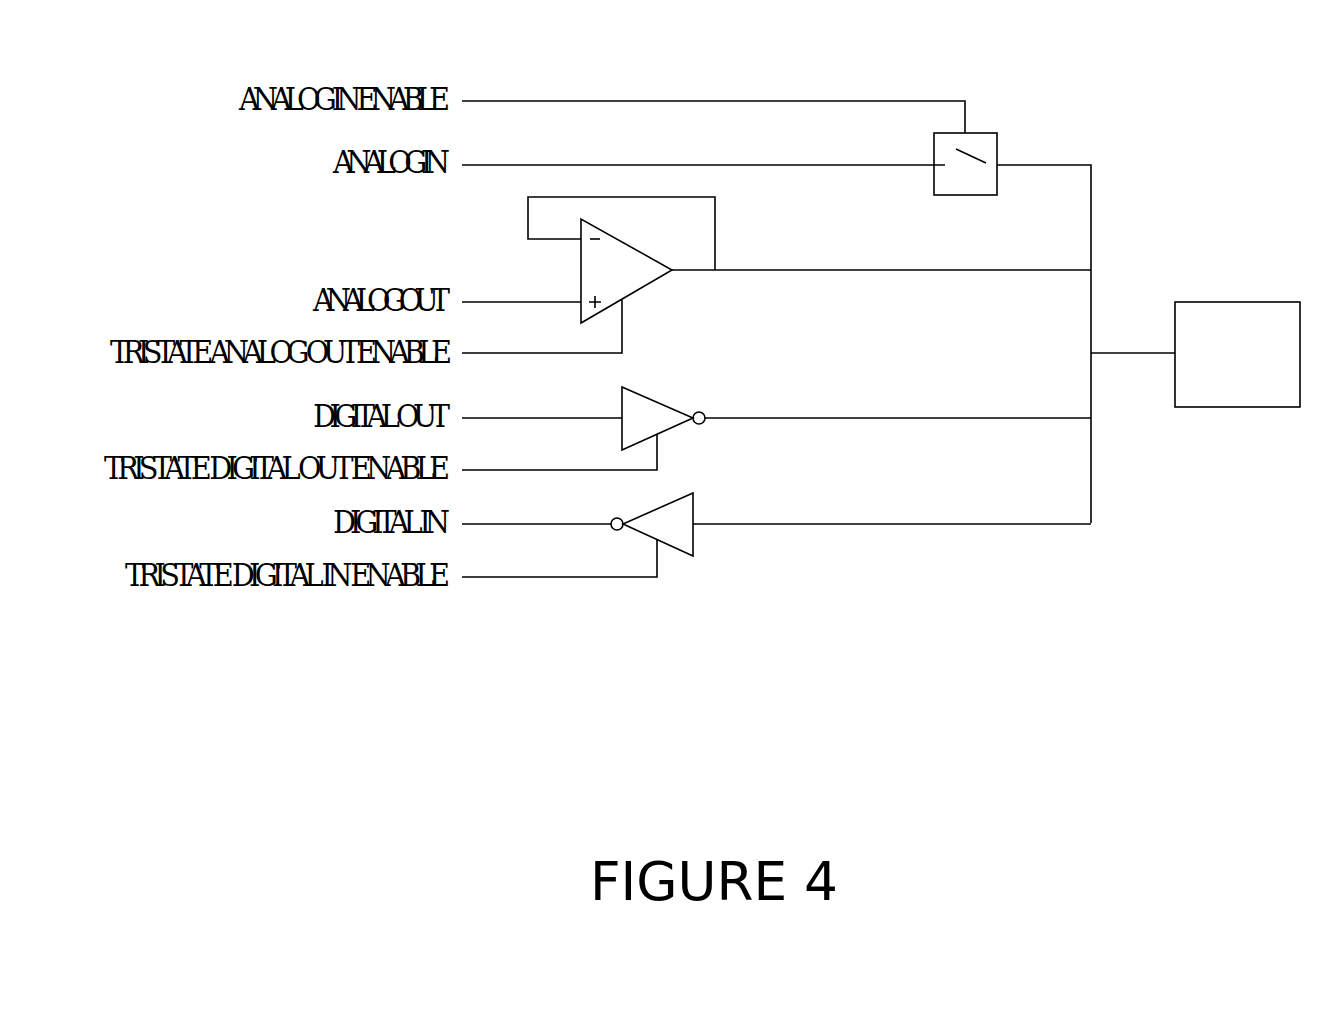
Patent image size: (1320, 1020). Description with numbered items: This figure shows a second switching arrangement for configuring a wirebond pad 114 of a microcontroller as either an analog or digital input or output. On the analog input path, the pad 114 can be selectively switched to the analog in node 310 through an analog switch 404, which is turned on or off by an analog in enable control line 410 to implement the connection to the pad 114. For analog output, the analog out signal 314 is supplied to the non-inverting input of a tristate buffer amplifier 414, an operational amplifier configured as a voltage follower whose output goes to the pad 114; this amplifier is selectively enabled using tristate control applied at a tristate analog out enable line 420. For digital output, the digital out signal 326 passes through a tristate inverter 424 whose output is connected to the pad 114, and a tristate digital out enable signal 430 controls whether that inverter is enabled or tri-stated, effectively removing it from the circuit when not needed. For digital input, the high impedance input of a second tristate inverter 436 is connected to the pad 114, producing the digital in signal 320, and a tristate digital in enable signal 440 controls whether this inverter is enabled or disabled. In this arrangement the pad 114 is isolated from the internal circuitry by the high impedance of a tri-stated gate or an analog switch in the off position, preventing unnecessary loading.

The analog in enable control line 410 is at (590, 101).
The analog in signal 310 is at (777, 165).
The analog switch 404 is at (943, 195).
The tristate buffer amplifier 414 is at (622, 243).
The analog out signal 314 is at (497, 302).
The tristate analog out enable line 420 is at (483, 353).
The tristate inverter 424 is at (635, 390).
The digital out signal 326 is at (485, 418).
The tristate digital out enable signal 430 is at (485, 470).
The tristate inverter 436 is at (680, 495).
The digital in signal 320 is at (485, 523).
The tristate digital in enable signal 440 is at (490, 577).
The pad 114 is at (1258, 389).